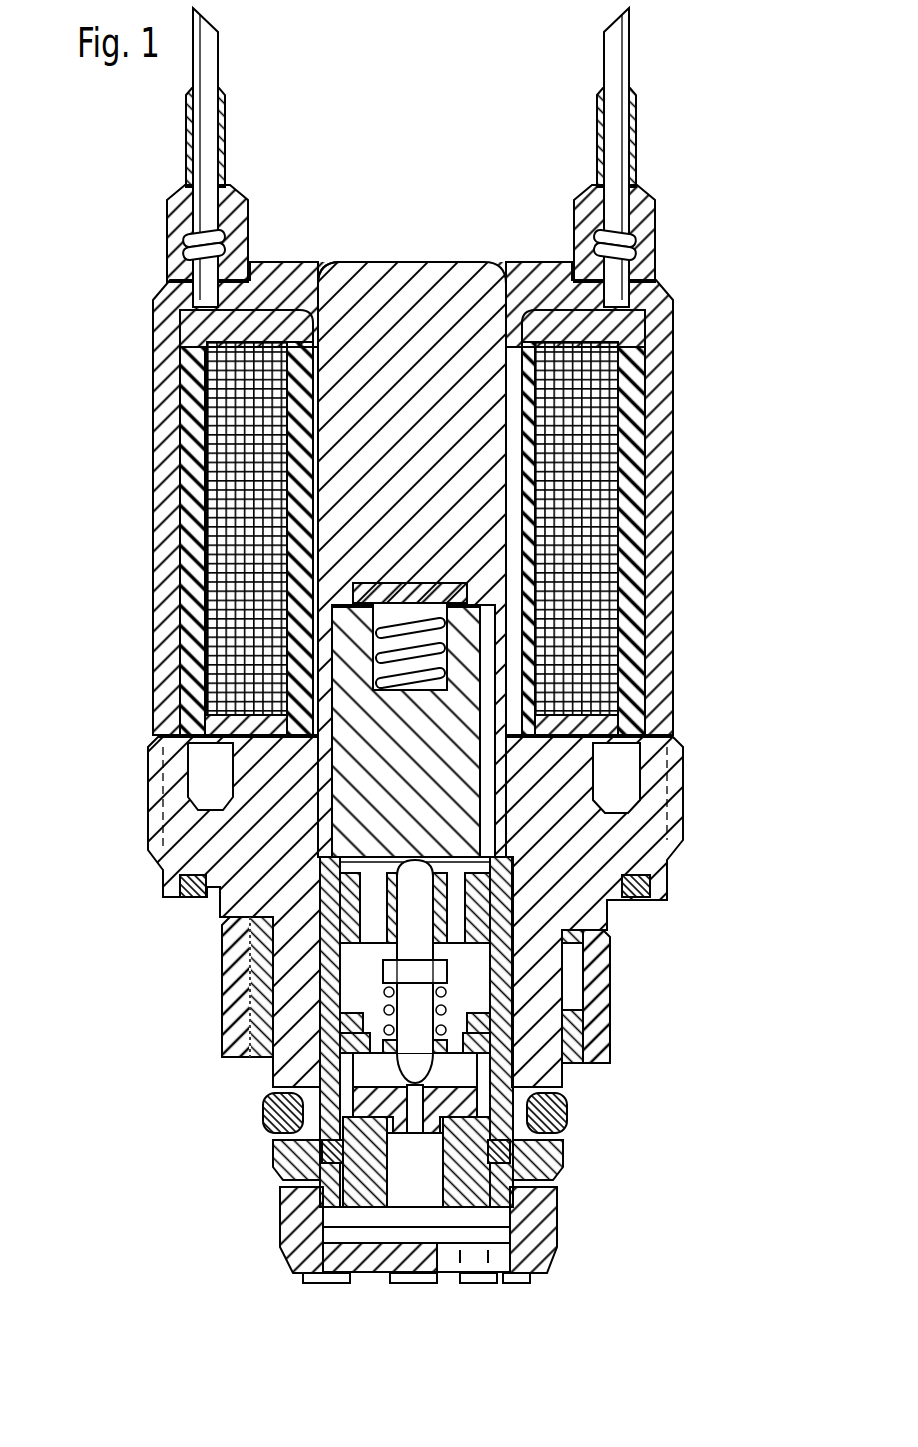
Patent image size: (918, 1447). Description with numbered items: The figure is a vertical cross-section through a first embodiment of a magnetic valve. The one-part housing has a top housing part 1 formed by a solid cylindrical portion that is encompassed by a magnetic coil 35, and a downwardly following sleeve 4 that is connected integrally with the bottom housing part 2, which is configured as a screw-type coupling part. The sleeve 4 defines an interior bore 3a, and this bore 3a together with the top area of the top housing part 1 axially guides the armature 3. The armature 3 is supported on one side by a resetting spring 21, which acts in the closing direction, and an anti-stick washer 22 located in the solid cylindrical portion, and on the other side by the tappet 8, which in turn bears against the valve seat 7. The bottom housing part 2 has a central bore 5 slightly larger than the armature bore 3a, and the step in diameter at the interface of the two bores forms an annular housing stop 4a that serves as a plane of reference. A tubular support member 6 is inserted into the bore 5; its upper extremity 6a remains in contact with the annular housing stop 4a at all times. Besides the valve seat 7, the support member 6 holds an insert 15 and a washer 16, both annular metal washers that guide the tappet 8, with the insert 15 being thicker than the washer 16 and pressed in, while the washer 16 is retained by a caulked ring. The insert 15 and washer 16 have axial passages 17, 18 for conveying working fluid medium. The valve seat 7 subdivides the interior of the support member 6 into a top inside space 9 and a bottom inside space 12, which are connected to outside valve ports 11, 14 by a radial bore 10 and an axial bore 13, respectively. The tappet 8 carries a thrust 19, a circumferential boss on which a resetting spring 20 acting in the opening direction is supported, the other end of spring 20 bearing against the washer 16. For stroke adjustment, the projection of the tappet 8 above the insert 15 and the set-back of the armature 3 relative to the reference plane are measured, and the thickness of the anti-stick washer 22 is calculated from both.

The top housing part 1 is at (443, 295).
The bottom housing part 2 is at (290, 987).
The armature 3 is at (452, 785).
The interior bore 3a is at (340, 268).
The sleeve 4 is at (320, 677).
The annular housing stop 4a is at (362, 905).
The central bore 5 is at (350, 1055).
The tubular support member 6 is at (327, 1128).
The upper extremity 6a is at (373, 900).
The valve seat 7 is at (548, 1133).
The tappet 8 is at (415, 900).
The top inside space 9 is at (247, 1013).
The radial bore 10 is at (510, 997).
The outside valve port 11 is at (552, 960).
The bottom inside space 12 is at (425, 1175).
The axial bore 13 is at (395, 1200).
The outside valve port 14 is at (497, 1258).
The insert 15 is at (250, 900).
The washer 16 is at (470, 1100).
The axial passage 17 is at (388, 895).
The axial passage 18 is at (450, 1043).
The thrust 19 is at (396, 970).
The resetting spring 20 is at (338, 1035).
The resetting spring 21 is at (440, 652).
The anti-stick washer 22 is at (460, 580).
The magnetic coil 35 is at (618, 423).